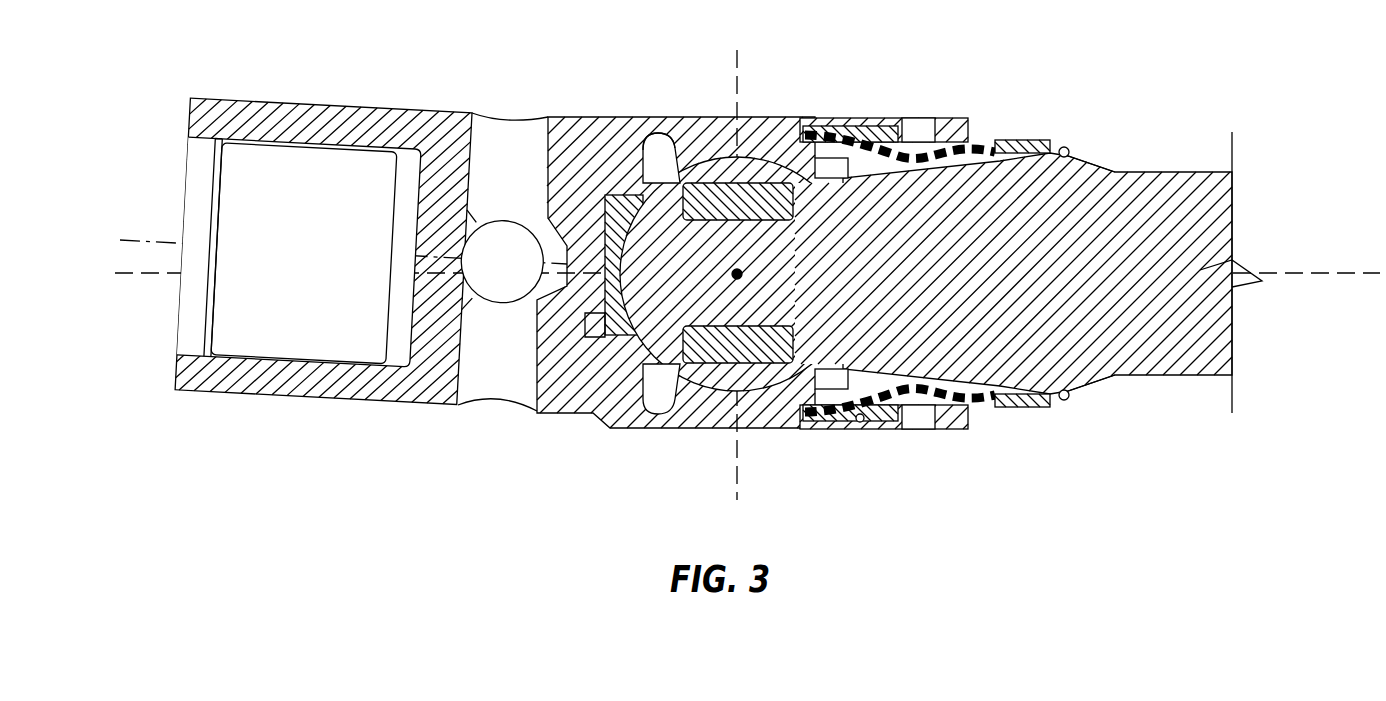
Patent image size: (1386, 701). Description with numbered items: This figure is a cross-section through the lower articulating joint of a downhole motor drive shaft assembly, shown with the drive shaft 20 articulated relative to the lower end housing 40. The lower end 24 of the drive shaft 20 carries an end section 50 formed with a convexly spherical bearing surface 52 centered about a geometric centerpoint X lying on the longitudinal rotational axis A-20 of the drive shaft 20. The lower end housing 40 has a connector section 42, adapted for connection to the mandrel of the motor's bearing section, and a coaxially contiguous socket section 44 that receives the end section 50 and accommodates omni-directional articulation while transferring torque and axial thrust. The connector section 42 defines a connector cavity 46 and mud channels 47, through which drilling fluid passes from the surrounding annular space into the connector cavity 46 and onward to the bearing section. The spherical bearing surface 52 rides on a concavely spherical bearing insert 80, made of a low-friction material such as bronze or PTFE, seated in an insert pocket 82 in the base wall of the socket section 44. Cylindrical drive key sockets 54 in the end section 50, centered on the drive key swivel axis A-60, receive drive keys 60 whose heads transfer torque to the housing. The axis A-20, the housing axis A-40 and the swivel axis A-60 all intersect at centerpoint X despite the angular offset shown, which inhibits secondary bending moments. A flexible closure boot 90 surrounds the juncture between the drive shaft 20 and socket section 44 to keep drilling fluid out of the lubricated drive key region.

The drive shaft 20 is at (1183, 172).
The lower end 24 is at (1110, 396).
The lower end housing 40 is at (235, 435).
The connector section 42 is at (318, 127).
The socket section 44 is at (620, 118).
The connector cavity 46 is at (315, 228).
The mud channels 47 is at (490, 133).
The end section 50 is at (643, 167).
The convexly spherical bearing surface 52 is at (623, 197).
The drive key sockets 54 is at (773, 135).
The drive key 60 is at (720, 153).
The bearing insert 80 is at (688, 372).
The insert pocket 82 is at (583, 313).
The closure boot 90 is at (980, 150).
The centerpoint X is at (862, 422).
The longitudinal rotational axis of drive shaft A-20 is at (140, 279).
The longitudinal rotational axis of end housing A-40 is at (167, 243).
The drive key swivel axis A-60 is at (737, 65).